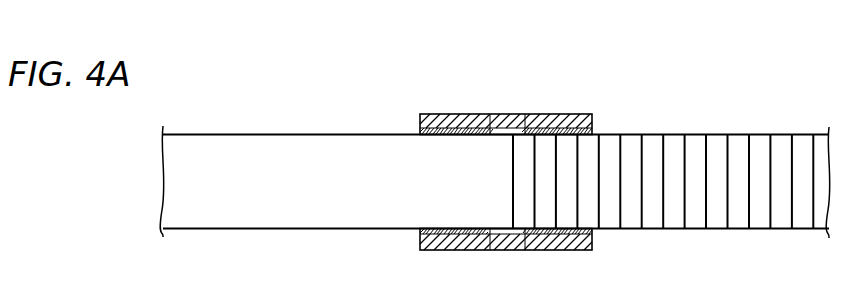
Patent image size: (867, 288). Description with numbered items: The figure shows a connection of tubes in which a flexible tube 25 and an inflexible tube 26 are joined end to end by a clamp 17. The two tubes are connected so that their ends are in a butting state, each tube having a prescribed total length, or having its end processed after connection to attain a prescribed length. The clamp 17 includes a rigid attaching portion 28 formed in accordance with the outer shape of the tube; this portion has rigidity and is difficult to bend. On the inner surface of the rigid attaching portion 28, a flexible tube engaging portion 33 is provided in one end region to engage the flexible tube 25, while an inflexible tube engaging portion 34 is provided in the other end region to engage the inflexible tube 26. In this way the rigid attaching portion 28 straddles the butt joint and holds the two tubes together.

The inflexible tube 26 is at (265, 134).
The flexible tube 25 is at (740, 133).
The clamp 17 is at (443, 113).
The rigid attaching portion 28 is at (511, 119).
The flexible tube engaging portion 33 is at (573, 130).
The inflexible tube engaging portion 34 is at (421, 131).